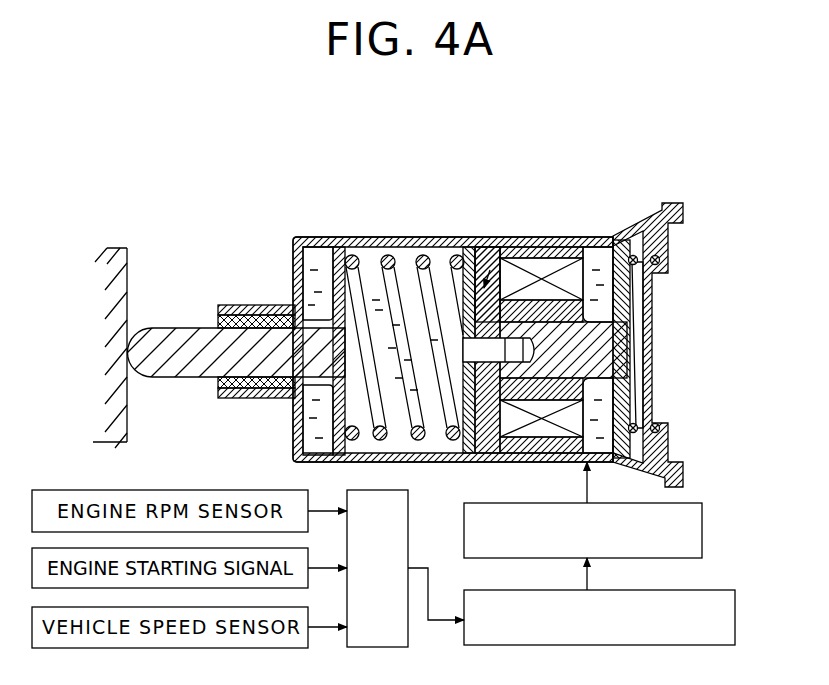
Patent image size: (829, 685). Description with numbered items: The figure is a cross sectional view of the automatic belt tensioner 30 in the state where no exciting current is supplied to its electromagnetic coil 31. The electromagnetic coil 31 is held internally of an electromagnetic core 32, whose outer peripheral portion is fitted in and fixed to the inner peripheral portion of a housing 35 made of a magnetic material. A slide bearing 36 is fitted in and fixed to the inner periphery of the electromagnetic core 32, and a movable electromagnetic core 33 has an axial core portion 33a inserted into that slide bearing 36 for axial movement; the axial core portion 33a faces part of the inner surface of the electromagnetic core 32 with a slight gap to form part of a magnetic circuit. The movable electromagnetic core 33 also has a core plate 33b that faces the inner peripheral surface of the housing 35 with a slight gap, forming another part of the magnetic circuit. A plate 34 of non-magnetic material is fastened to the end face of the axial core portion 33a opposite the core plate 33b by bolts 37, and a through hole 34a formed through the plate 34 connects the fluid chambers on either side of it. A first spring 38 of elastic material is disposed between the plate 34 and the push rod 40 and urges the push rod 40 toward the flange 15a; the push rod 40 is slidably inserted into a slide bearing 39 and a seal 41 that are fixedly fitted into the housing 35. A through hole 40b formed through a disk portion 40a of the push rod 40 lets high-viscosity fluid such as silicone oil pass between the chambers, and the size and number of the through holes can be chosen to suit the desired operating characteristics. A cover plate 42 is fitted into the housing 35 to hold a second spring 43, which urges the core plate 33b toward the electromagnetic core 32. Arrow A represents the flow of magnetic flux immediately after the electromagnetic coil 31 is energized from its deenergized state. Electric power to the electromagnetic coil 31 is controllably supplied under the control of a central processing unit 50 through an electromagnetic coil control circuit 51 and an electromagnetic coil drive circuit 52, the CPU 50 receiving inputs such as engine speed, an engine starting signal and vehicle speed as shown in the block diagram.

The flange 15a is at (127, 270).
The automatic belt tensioner 30 is at (465, 220).
The electromagnetic coil 31 is at (560, 250).
The electromagnetic core 32 is at (522, 262).
The movable electromagnetic core 33 is at (600, 252).
The axial core portion 33a is at (621, 245).
The core plate 33b is at (640, 240).
The plate 34 is at (482, 250).
The through hole 34a is at (448, 256).
The housing 35 is at (592, 333).
The slide bearing 36 is at (490, 250).
The bolts 37 is at (417, 240).
The first spring 38 is at (387, 256).
The slide bearing 39 is at (257, 305).
The push rod 40 is at (178, 342).
The disk portion 40a is at (327, 240).
The through hole 40b is at (312, 238).
The seal 41 is at (218, 305).
The cover plate 42 is at (668, 246).
The second spring 43 is at (657, 422).
The arrow A is at (522, 300).
The central processing unit (CPU) 50 is at (408, 530).
The electromagnetic coil control circuit 51 is at (735, 618).
The electromagnetic coil drive circuit 52 is at (702, 528).